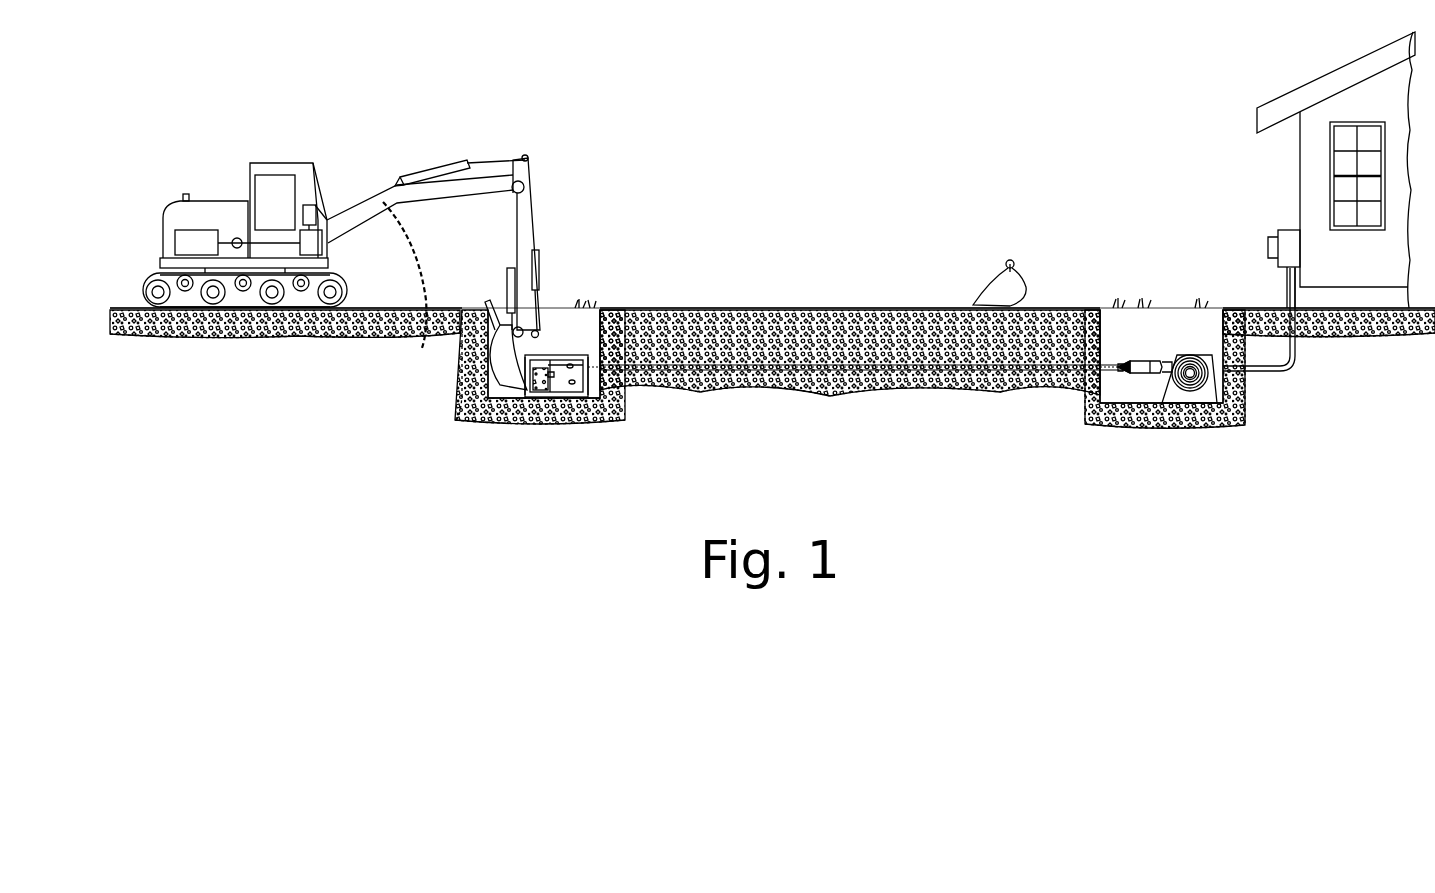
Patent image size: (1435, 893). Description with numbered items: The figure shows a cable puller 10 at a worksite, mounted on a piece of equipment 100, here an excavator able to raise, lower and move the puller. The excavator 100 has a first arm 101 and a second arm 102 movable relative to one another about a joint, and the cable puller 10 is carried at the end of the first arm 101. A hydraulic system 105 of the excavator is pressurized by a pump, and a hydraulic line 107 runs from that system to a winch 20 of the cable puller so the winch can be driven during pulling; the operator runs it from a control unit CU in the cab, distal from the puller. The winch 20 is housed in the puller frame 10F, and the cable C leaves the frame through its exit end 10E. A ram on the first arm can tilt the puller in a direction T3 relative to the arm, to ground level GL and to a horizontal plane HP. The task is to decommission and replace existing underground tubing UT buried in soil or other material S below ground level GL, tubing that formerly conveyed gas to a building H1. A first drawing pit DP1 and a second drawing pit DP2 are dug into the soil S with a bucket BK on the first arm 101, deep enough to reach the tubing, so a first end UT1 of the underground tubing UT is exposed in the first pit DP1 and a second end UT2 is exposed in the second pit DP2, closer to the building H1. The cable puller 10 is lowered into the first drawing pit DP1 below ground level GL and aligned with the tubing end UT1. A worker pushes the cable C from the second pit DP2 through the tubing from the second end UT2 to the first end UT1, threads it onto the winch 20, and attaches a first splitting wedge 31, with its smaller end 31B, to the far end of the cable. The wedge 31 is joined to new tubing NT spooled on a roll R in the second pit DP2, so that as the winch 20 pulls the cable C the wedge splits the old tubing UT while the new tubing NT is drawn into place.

The piece of equipment 100 is at (195, 190).
The hydraulic system 105 is at (236, 222).
The control unit CU is at (310, 204).
The second arm 102 is at (365, 207).
The first arm 101 is at (534, 224).
The hydraulic line 107 is at (508, 353).
The tool attachment point T3 is at (537, 332).
The cable puller 10 is at (568, 330).
The winch 20 is at (535, 384).
The cable puller frame 10F is at (590, 363).
The exit end 10E is at (582, 397).
The first drawing pit DP1 is at (572, 330).
The second drawing pit DP2 is at (1116, 335).
The ground level GL is at (655, 308).
The underground tubing UT is at (660, 352).
The soil S is at (706, 352).
The horizontal plane HP is at (808, 307).
The first end of underground tubing UT1 is at (606, 370).
The second end of underground tubing UT2 is at (1098, 372).
The cable C is at (710, 372).
The bucket BK is at (1010, 259).
The first splitting wedge 31 is at (1126, 375).
The smaller end of first splitting wedge 31B is at (1123, 375).
The new tubing NT is at (1163, 358).
The roll R is at (1210, 398).
The house H1 is at (1356, 268).